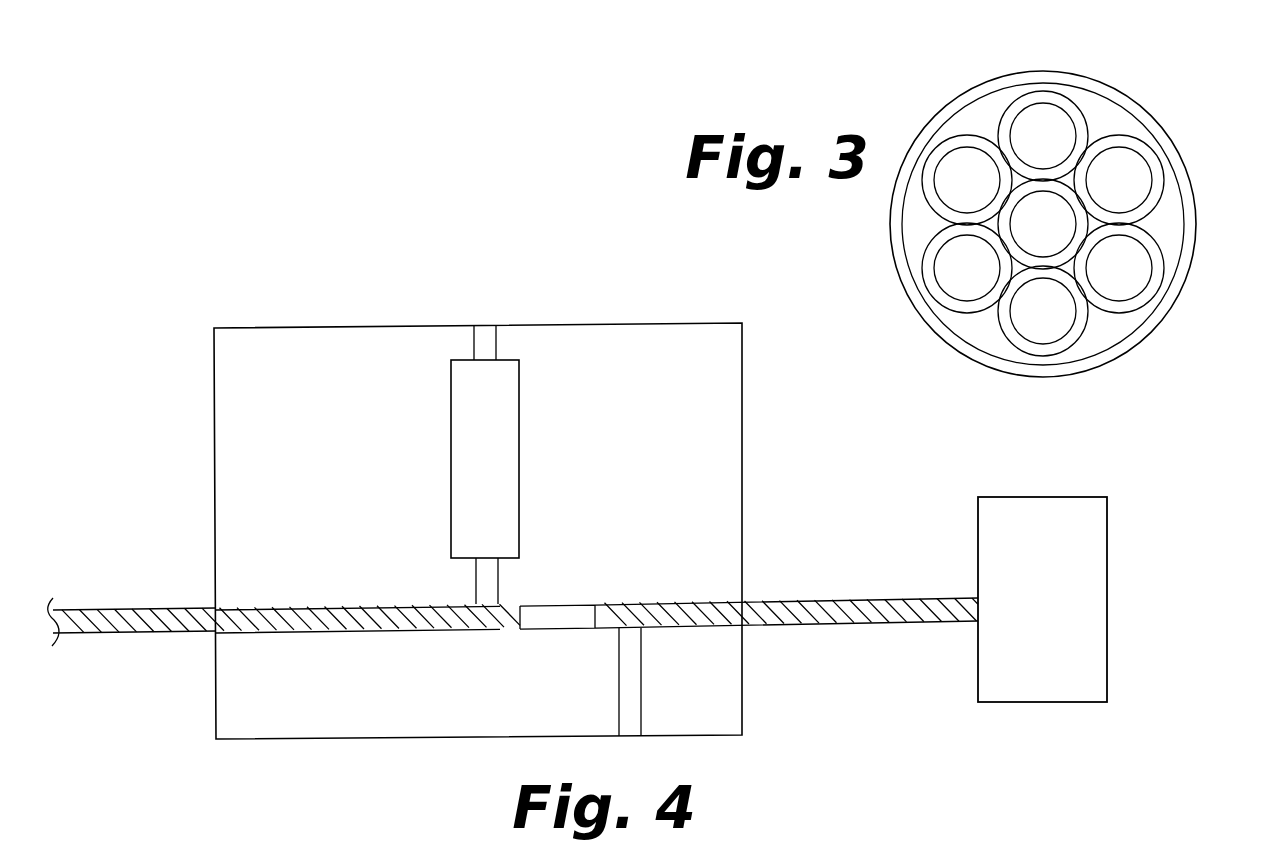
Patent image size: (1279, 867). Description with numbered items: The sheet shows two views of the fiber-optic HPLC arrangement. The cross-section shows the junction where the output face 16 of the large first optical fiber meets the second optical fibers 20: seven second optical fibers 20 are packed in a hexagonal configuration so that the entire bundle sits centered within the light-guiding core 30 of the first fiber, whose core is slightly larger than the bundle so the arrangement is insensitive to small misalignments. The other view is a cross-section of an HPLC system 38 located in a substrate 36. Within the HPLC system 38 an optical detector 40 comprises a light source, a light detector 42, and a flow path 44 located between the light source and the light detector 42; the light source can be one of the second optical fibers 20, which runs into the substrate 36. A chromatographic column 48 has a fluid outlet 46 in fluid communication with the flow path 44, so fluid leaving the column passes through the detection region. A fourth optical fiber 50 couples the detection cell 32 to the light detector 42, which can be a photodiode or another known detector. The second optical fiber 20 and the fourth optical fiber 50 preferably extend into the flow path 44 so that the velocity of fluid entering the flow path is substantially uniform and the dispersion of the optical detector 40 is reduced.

In FIG. 3, the output face 16 is at (1105, 117).
In FIG. 3, the second optical fibers 20 is at (1032, 117).
In FIG. 4, the second optical fibers 20 is at (137, 635).
In FIG. 3, the light-guiding core 30 is at (1087, 98).
In FIG. 4, the detection cell 32 is at (558, 629).
In FIG. 4, the substrate 36 is at (213, 435).
In FIG. 4, the HPLC system 38 is at (493, 531).
In FIG. 4, the optical detector 40 is at (475, 643).
In FIG. 4, the light detector 42 is at (1017, 497).
In FIG. 4, the flow path 44 is at (570, 612).
In FIG. 4, the fluid outlet 46 is at (498, 593).
In FIG. 4, the chromatographic column 48 is at (520, 440).
In FIG. 4, the fourth optical fiber 50 is at (798, 600).